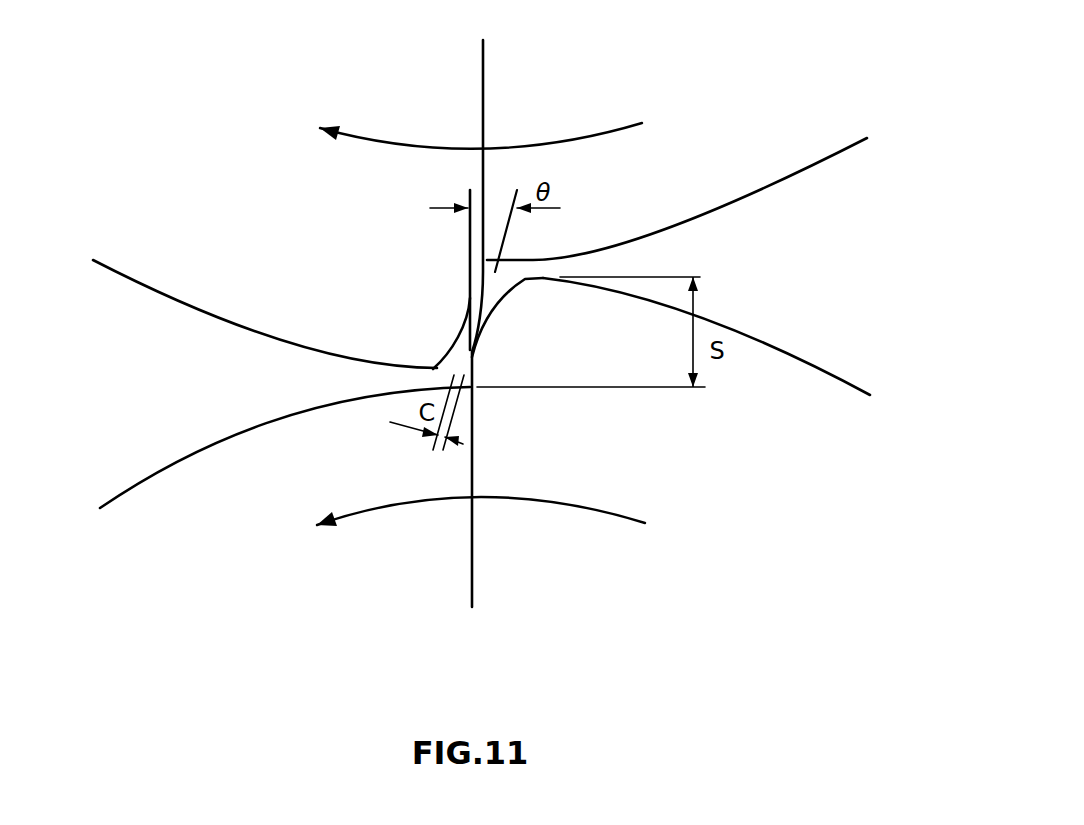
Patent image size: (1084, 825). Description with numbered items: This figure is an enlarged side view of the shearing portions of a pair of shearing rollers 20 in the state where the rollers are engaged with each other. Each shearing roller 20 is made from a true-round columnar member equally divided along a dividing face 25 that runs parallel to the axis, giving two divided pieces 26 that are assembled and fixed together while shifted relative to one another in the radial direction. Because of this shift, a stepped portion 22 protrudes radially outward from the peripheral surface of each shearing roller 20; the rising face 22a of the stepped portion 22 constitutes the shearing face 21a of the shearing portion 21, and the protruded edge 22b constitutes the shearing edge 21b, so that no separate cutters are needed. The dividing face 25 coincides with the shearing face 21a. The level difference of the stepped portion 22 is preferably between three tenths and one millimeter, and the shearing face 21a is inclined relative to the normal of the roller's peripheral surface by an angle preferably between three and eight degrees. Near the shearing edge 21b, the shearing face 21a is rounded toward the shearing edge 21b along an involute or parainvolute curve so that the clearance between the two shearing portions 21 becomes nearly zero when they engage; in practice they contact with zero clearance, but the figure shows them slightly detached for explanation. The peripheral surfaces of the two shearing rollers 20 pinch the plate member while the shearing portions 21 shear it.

The shearing roller 20 is at (837, 158).
The shearing portion 21 is at (463, 284).
The shearing face 21a is at (463, 306).
The shearing edge 21b is at (461, 317).
The stepped portion 22 is at (463, 284).
The rising face 22a is at (522, 362).
The protruded edge 22b is at (522, 337).
The dividing face 25 is at (483, 72).
The divided piece 26 is at (485, 323).